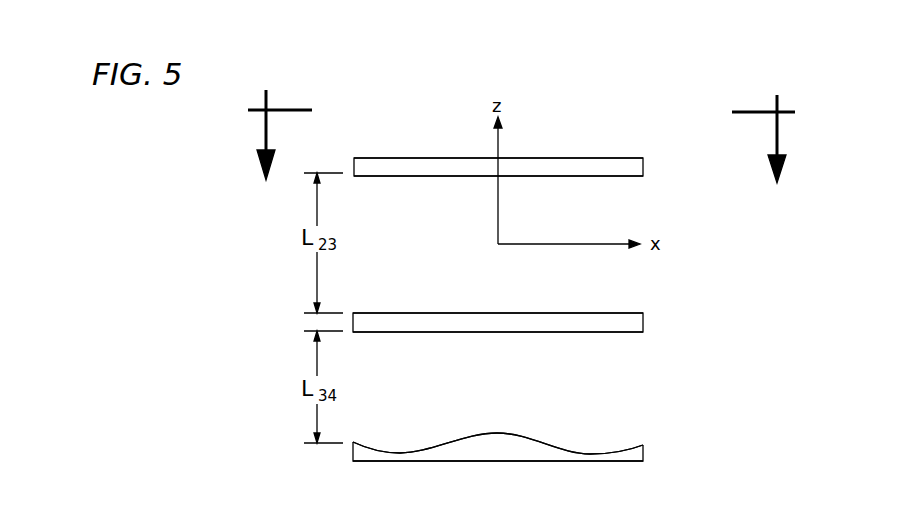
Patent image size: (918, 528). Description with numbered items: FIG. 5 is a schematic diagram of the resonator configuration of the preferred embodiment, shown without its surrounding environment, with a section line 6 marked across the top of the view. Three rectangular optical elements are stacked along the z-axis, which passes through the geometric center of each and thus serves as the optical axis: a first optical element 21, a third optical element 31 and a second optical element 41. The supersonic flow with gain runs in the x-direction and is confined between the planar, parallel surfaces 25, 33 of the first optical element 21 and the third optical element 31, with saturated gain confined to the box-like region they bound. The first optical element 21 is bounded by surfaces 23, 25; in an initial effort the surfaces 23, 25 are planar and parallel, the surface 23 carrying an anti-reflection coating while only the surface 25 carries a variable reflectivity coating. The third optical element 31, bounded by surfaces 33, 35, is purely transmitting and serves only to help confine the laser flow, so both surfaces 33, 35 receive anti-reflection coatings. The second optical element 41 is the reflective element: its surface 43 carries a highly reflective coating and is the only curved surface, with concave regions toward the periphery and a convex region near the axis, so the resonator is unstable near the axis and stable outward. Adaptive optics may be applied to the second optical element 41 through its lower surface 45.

The section line for FIG. 6 is at (521, 136).
The first optical element 21 is at (630, 167).
The surface of first optical element 23 is at (610, 158).
The surface of first optical element 25 is at (610, 176).
The third optical element 31 is at (630, 322).
The surface of third optical element 33 is at (610, 313).
The surface of third optical element 35 is at (610, 332).
The second optical element 41 is at (630, 455).
The surface of second optical element 43 is at (610, 445).
The lower surface of second optical element 45 is at (610, 461).